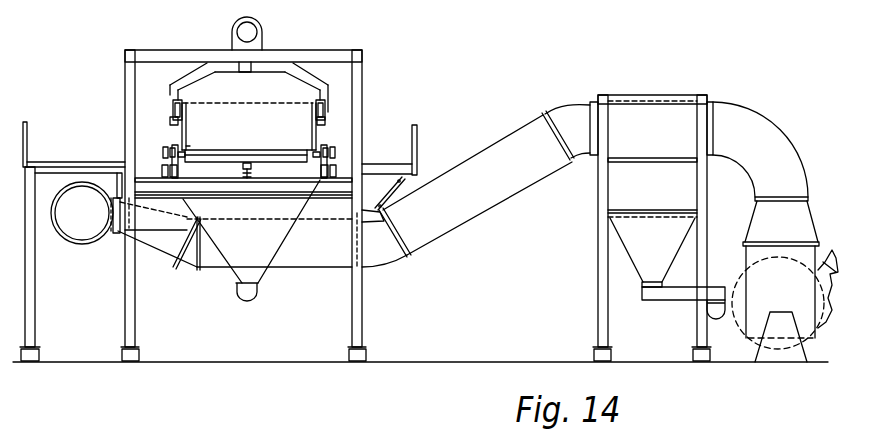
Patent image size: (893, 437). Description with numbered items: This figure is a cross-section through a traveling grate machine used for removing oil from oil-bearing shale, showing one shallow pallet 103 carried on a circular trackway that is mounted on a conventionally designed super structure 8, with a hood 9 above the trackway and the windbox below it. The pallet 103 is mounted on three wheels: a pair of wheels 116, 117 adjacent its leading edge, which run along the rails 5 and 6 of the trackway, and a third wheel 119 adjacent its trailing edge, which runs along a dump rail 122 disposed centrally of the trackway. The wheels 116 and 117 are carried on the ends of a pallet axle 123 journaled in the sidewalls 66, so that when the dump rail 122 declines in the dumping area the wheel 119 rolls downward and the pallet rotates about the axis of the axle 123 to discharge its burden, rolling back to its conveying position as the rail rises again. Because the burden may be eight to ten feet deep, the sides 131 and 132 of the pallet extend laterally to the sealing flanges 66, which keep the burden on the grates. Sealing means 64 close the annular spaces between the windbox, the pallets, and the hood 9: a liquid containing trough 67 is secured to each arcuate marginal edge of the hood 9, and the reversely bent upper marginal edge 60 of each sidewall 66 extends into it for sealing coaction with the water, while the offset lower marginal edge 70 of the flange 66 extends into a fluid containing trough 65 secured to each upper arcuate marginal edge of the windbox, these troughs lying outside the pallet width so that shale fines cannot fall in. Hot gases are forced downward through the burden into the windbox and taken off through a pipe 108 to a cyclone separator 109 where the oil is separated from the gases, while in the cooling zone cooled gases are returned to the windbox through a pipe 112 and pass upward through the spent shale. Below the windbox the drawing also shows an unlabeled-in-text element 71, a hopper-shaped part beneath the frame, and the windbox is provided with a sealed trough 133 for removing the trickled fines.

The rail 5 is at (163, 168).
The rail 6 is at (332, 163).
The super structure 8 is at (368, 72).
The hood 9 is at (290, 72).
The upper marginal edge 60 is at (182, 102).
The sealing means 64 is at (185, 125).
The trough 65 is at (180, 172).
The sidewall 66 is at (187, 137).
The trough 67 is at (169, 116).
The lower marginal edge 70 is at (182, 163).
The hopper 71 is at (264, 272).
The pallet 103 is at (258, 151).
The pipe 108 is at (450, 222).
The cyclone separator 109 is at (670, 93).
The pipe 112 is at (764, 128).
The wheel 116 is at (172, 158).
The wheel 117 is at (327, 155).
The third wheel 119 is at (249, 172).
The dump rail 122 is at (238, 180).
The pallet axle 123 is at (182, 150).
The side 131 is at (313, 148).
The side 132 is at (187, 147).
The sealed trough 133 is at (247, 301).